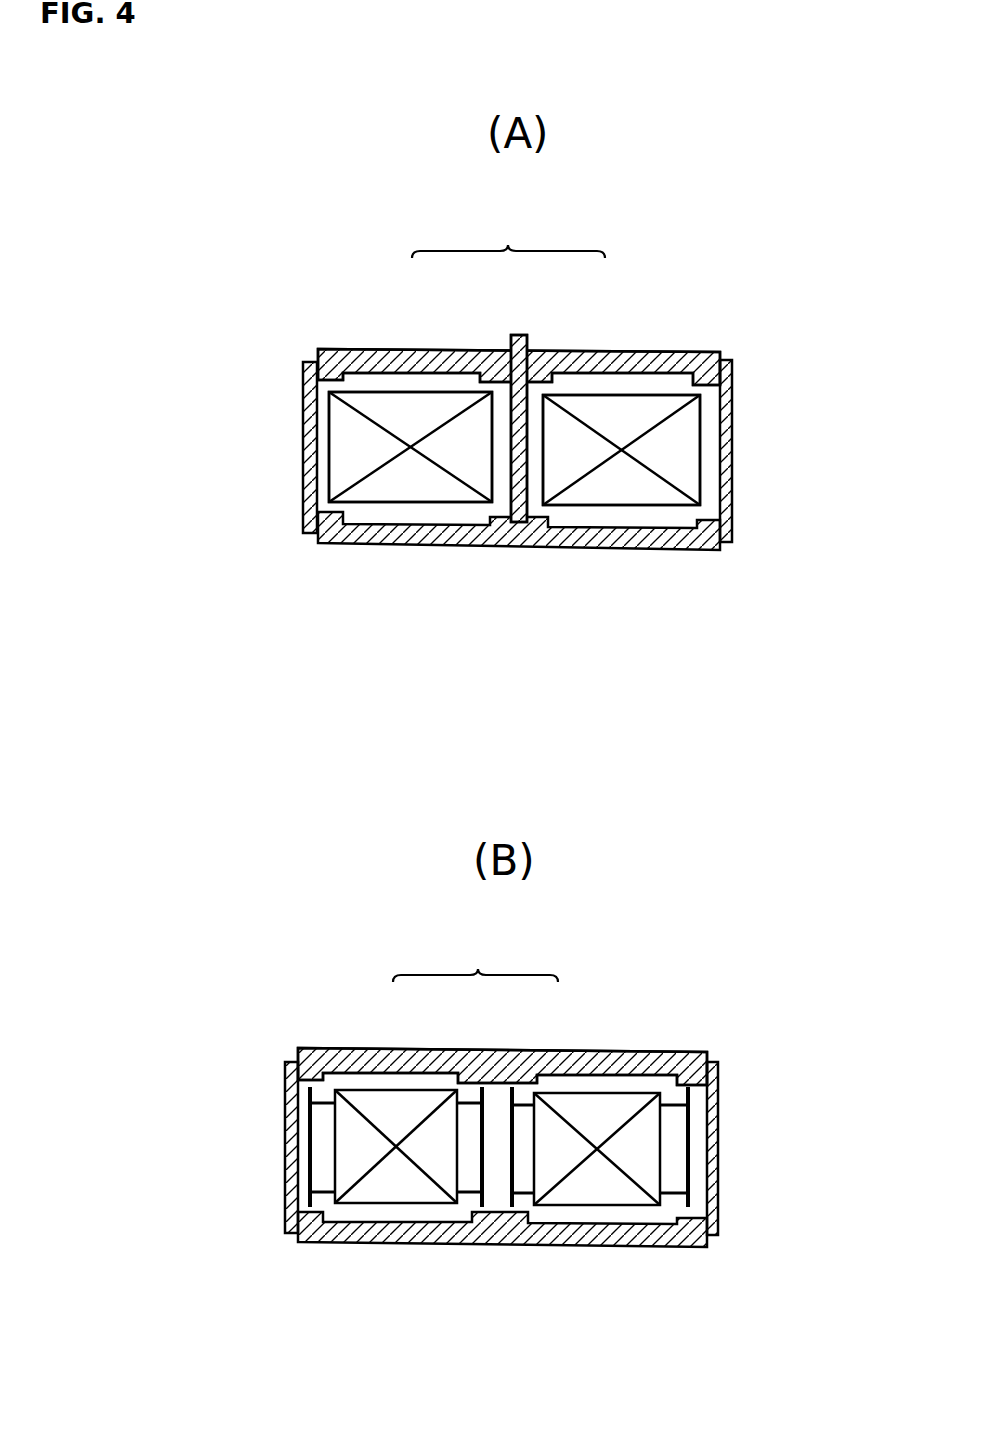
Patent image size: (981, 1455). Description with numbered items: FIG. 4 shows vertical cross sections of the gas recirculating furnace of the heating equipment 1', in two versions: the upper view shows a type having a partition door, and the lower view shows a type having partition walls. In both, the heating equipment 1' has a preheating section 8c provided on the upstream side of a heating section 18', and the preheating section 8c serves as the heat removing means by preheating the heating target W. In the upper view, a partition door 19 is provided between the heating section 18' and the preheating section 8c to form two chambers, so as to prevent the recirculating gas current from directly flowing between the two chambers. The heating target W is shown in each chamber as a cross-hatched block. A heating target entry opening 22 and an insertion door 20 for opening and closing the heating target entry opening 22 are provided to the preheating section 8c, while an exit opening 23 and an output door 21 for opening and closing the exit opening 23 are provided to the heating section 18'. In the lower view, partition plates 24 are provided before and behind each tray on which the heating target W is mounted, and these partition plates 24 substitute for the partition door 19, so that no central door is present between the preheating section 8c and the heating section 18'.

The heating equipment 1' is at (499, 596).
The preheating section 8c is at (417, 380).
The heating section 18' is at (605, 779).
The partition door 19 is at (518, 335).
The insertion door 20 is at (303, 407).
The output door 21 is at (732, 427).
The heating target entry opening 22 is at (328, 380).
The exit opening 23 is at (712, 388).
The partition plate 24 is at (305, 1165).
The heating target W is at (443, 488).